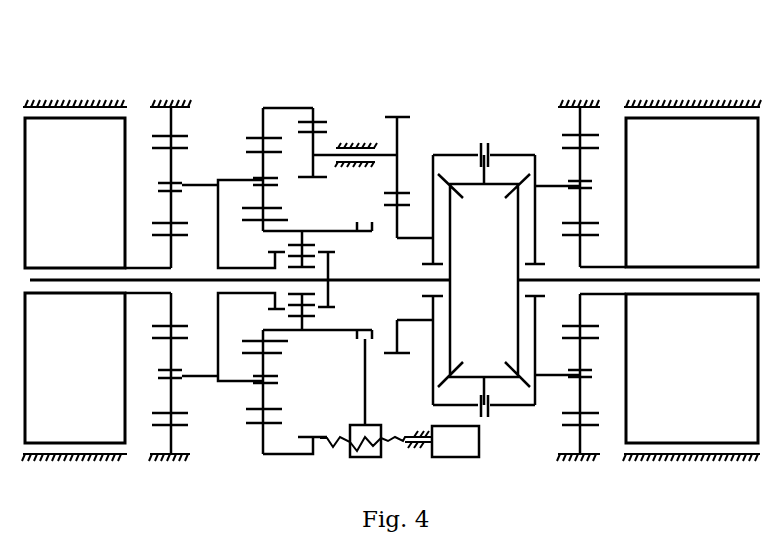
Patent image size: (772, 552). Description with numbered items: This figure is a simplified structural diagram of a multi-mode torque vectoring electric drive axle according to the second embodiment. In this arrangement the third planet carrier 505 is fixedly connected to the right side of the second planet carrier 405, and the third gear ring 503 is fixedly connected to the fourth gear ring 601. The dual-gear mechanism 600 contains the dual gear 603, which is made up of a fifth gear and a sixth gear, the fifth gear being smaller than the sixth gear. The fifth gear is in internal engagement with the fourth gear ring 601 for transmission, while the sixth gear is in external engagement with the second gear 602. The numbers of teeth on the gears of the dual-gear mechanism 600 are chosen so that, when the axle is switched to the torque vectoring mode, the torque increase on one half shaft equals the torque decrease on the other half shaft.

The second planet carrier 405 is at (183, 183).
The third planet carrier 505 is at (240, 178).
The third gear ring 503 is at (260, 134).
The fourth gear ring 601 is at (312, 118).
The dual gear 603 is at (322, 151).
The dual-gear mechanism 600 is at (372, 127).
The second gear 602 is at (400, 212).